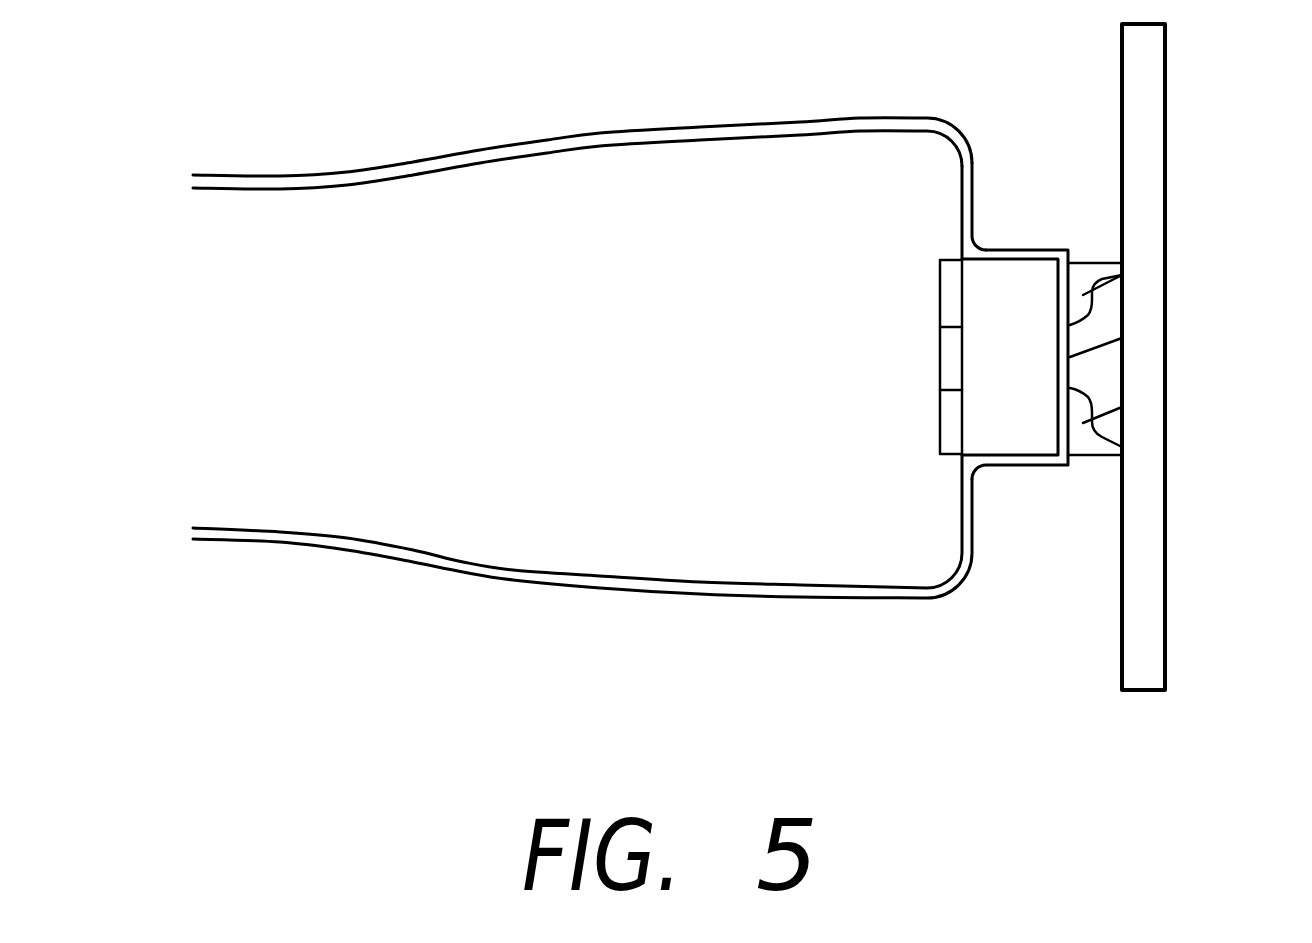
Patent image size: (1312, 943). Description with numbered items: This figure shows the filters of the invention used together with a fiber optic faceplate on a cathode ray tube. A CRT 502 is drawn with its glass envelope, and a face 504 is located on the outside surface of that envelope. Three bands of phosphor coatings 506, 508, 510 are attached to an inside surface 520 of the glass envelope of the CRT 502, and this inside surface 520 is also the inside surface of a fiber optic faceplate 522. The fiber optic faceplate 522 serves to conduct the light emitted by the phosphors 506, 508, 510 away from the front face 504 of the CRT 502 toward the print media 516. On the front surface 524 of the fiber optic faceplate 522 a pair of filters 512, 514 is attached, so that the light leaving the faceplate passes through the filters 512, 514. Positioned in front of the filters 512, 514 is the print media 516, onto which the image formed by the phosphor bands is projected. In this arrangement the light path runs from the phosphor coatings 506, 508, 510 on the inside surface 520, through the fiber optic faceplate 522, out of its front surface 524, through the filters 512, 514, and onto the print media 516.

The CRT 502 is at (697, 133).
The face 504 is at (973, 205).
The phosphor coating 506 is at (946, 280).
The phosphor coating 508 is at (950, 360).
The phosphor coating 510 is at (950, 440).
The filter 512 is at (1122, 277).
The filter 514 is at (1122, 405).
The print media 516 is at (1165, 657).
The inside surface 520 is at (962, 550).
The fiber optic faceplate 522 is at (1037, 440).
The front surface 524 is at (1122, 338).